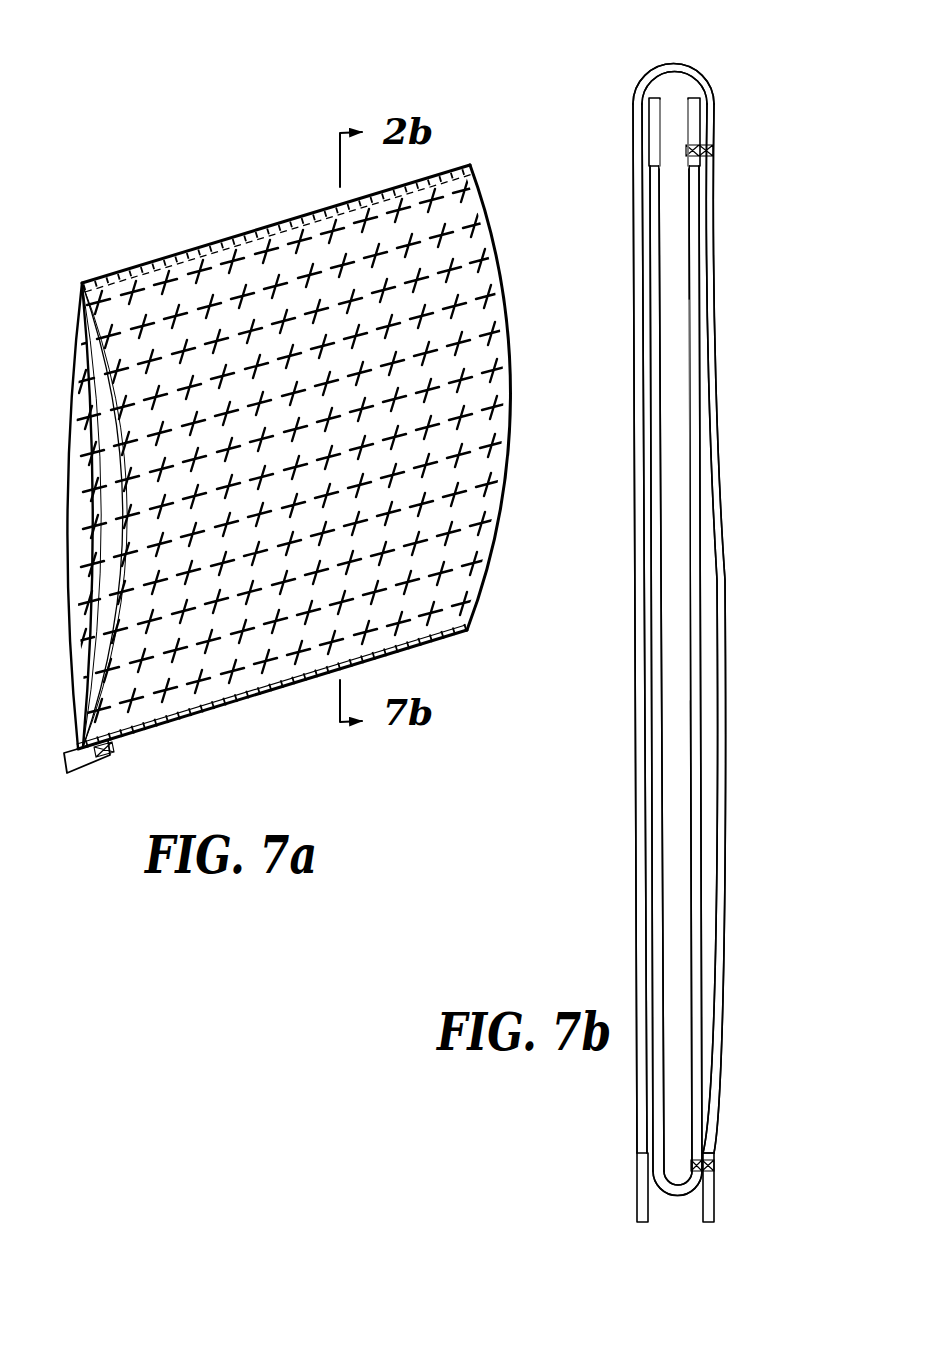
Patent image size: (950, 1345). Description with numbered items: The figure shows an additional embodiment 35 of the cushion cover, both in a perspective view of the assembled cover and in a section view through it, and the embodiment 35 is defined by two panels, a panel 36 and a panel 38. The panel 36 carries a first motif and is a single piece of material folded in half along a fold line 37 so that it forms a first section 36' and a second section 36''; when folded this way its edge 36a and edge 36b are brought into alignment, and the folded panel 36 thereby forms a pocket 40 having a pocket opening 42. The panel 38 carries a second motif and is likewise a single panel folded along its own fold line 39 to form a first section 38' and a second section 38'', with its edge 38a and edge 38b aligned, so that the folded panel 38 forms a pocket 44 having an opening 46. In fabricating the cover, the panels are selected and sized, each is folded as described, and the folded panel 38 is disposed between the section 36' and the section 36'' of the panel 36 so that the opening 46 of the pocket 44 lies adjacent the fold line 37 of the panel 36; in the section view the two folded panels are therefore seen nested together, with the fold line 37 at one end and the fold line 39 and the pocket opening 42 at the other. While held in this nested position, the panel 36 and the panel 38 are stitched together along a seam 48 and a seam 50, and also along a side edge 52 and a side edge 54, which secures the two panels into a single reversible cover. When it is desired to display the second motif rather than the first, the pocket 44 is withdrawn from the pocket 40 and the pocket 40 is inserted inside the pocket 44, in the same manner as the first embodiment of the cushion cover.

In FIG. 7a, the additional embodiment 35 is at (89, 242).
In FIG. 7a, the panel 36 is at (298, 455).
In FIG. 7b, the panel 36 is at (655, 608).
In FIG. 7b, the first section 36' is at (607, 628).
In FIG. 7b, the second section 36'' is at (745, 628).
In FIG. 7b, the edge 36a is at (643, 1225).
In FIG. 7b, the edge 36b is at (710, 1225).
In FIG. 7b, the fold line 37 is at (669, 62).
In FIG. 7b, the panel 38 is at (702, 681).
In FIG. 7b, the first section 38' is at (605, 668).
In FIG. 7b, the second section 38'' is at (739, 668).
In FIG. 7b, the edge 38a is at (654, 96).
In FIG. 7b, the edge 38b is at (694, 96).
In FIG. 7b, the fold line 39 is at (680, 1197).
In FIG. 7b, the pocket 40 is at (655, 908).
In FIG. 7a, the pocket opening 42 is at (185, 727).
In FIG. 7b, the pocket opening 42 is at (689, 1217).
In FIG. 7b, the pocket 44 is at (677, 478).
In FIG. 7b, the opening 46 is at (678, 108).
In FIG. 7a, the seam 48 is at (180, 262).
In FIG. 7b, the seam 48 is at (755, 108).
In FIG. 7a, the seam 50 is at (289, 690).
In FIG. 7b, the seam 50 is at (745, 1122).
In FIG. 7a, the side edge 52 is at (98, 551).
In FIG. 7a, the side edge 54 is at (510, 448).